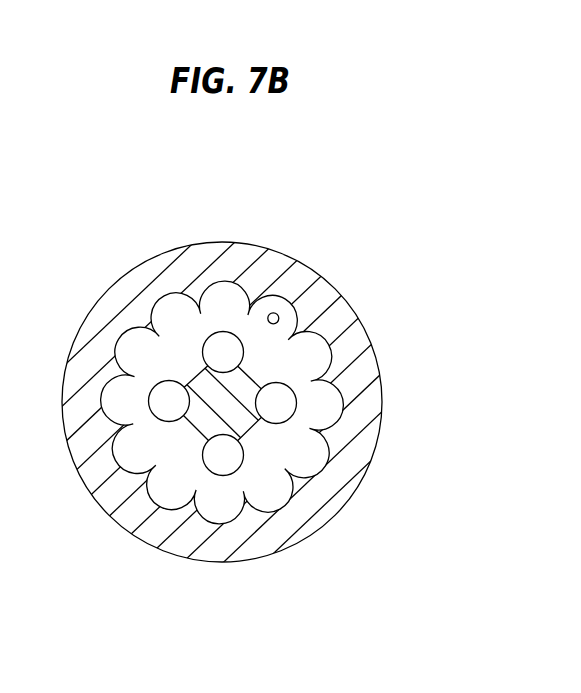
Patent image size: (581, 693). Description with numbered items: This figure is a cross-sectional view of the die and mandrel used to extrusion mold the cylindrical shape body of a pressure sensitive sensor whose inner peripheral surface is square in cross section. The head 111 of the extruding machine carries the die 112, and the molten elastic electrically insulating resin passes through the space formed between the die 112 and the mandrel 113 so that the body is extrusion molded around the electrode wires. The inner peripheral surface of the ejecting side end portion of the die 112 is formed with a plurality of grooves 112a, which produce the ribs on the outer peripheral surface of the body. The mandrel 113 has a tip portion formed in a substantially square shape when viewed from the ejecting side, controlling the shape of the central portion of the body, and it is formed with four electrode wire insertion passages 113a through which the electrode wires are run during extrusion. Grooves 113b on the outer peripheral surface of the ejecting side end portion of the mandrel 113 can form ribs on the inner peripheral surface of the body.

The head 111 is at (138, 225).
The die 112 is at (223, 241).
The grooves 112a is at (276, 313).
The mandrel 113 is at (210, 392).
The electrode wire insertion passages 113a is at (288, 400).
The grooves 113b is at (190, 428).